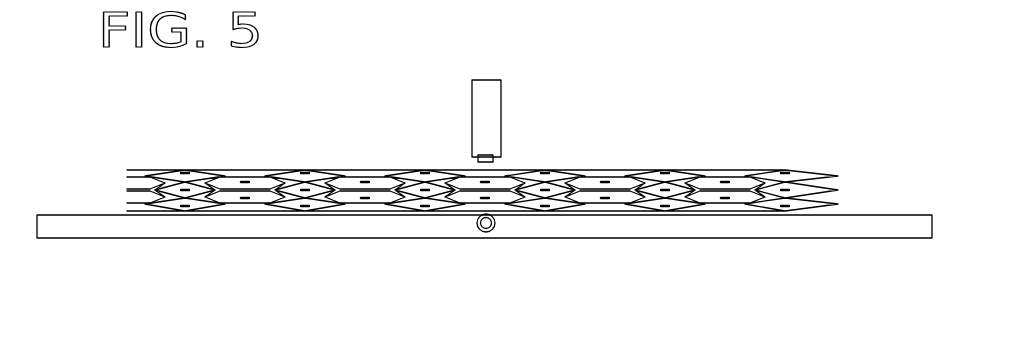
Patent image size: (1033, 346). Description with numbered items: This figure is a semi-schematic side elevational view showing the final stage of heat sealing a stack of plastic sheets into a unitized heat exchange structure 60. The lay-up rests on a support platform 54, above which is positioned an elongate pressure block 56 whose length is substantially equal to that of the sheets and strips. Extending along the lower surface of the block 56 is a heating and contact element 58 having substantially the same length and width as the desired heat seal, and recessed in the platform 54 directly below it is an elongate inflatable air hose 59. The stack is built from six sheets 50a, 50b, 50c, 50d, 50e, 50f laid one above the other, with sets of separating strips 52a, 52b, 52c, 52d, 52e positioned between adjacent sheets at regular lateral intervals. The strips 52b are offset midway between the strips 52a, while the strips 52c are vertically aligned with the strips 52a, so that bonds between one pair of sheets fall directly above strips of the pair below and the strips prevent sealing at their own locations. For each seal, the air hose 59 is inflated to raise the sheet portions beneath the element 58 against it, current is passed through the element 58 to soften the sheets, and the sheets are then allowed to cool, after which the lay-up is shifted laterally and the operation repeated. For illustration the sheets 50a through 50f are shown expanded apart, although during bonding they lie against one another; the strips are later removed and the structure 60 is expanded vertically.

The first sheet 50a is at (155, 208).
The second sheet 50b is at (168, 202).
The third sheet 50c is at (218, 178).
The fourth sheet 50d is at (140, 186).
The fifth sheet 50e is at (223, 178).
The sixth sheet 50f is at (165, 168).
The first separating strips 52a is at (303, 203).
The second separating strips 52b is at (365, 197).
The third separating strips 52c is at (420, 196).
The fourth separating strips 52d is at (367, 178).
The fifth separating strips 52e is at (425, 173).
The support platform 54 is at (694, 228).
The pressure block 56 is at (492, 98).
The heating and contact element 58 is at (487, 153).
The inflatable air hose 59 is at (493, 227).
The unitized heat exchange structure 60 is at (733, 143).